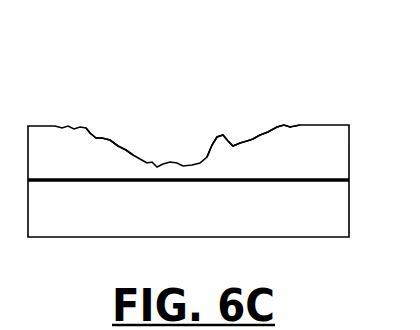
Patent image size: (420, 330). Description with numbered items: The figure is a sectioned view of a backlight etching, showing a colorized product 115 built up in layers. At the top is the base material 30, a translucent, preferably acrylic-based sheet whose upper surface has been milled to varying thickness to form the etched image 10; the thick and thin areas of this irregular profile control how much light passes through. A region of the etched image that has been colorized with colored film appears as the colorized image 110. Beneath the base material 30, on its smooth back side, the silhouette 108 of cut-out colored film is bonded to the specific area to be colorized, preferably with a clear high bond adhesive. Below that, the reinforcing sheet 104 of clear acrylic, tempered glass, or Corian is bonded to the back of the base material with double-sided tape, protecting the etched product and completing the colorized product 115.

The reinforcing sheet 104 is at (82, 224).
The silhouette 108 is at (183, 178).
The base material 30 is at (341, 148).
The etched image 10 is at (259, 134).
The colorized image 110 is at (106, 137).
The colorized product 115 is at (322, 95).